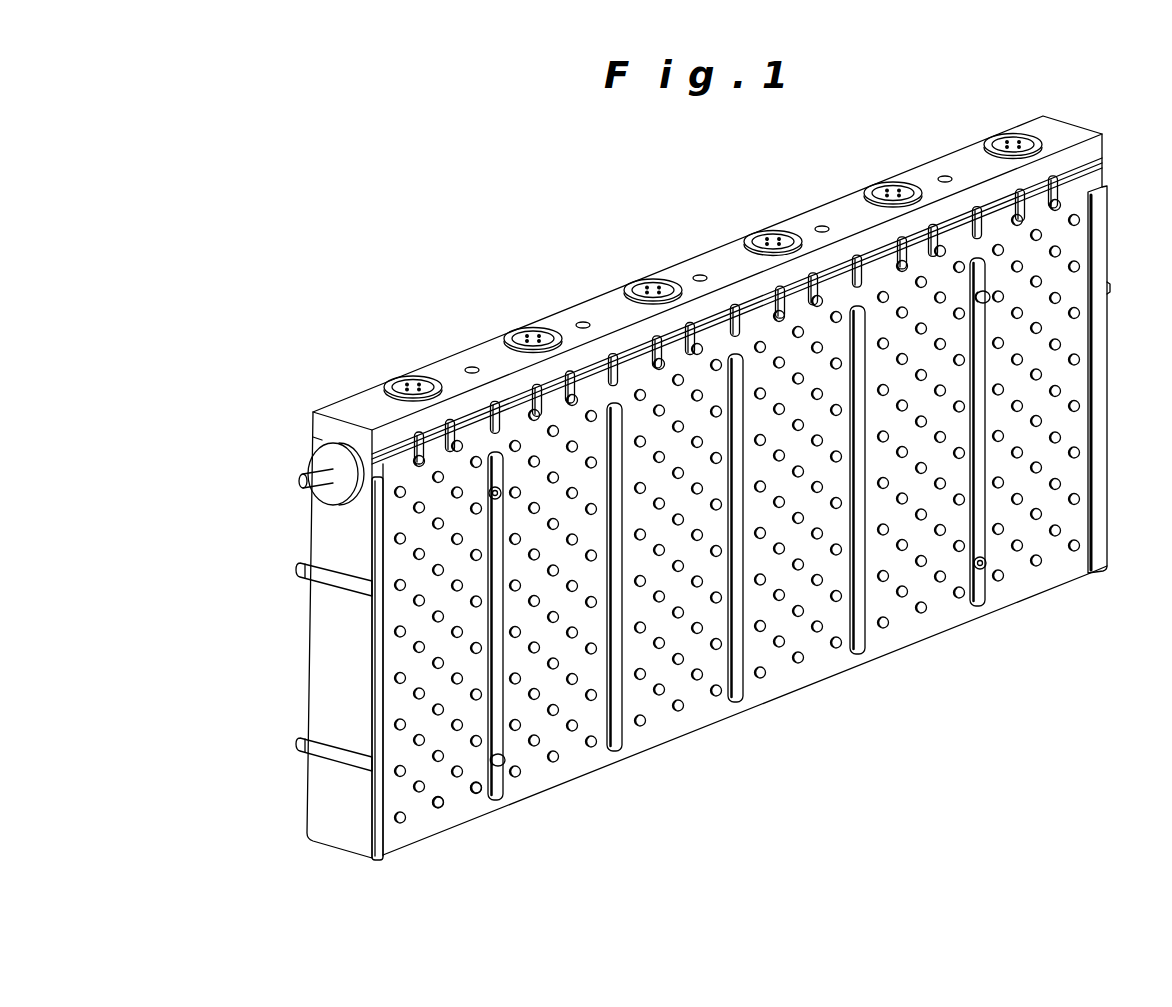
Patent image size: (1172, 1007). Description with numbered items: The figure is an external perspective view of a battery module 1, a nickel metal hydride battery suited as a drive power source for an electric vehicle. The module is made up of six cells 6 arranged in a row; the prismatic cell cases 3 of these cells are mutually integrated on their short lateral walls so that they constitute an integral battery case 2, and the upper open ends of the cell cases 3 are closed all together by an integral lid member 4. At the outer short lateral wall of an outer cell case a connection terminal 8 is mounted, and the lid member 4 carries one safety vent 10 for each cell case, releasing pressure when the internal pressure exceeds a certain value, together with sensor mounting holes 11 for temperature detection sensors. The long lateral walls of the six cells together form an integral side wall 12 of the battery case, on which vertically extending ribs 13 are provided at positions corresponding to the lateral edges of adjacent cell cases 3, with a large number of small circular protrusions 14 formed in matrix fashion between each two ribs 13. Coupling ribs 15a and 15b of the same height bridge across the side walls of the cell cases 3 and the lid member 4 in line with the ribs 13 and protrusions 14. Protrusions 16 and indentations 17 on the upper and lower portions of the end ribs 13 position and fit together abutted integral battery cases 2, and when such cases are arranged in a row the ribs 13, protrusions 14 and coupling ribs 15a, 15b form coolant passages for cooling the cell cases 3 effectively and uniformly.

The battery module 1 is at (296, 403).
The integral battery case 2 is at (297, 640).
The cell cases 3 is at (1038, 577).
The lid member 4 is at (388, 437).
The cells 6 is at (1063, 587).
The connection terminals 8 is at (327, 480).
The safety vent 10 is at (658, 284).
The sensor mounting hole 11 is at (942, 178).
The side wall 12 is at (713, 668).
The ribs 13 is at (378, 678).
The protrusions 14 is at (476, 794).
The coupling rib 15a is at (450, 419).
The coupling rib 15b is at (419, 431).
The protrusions 16 is at (991, 297).
The indentations 17 is at (489, 495).